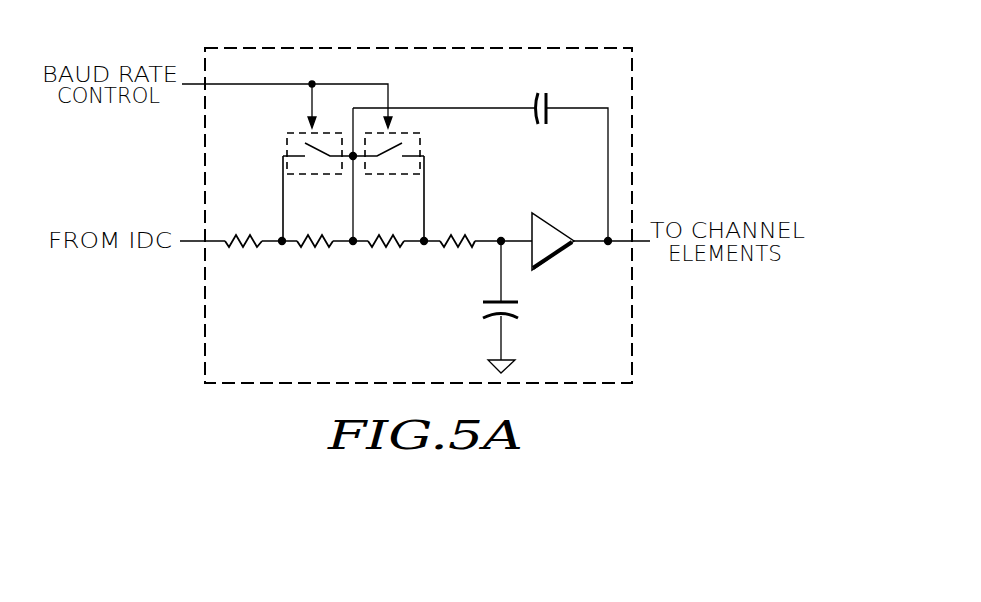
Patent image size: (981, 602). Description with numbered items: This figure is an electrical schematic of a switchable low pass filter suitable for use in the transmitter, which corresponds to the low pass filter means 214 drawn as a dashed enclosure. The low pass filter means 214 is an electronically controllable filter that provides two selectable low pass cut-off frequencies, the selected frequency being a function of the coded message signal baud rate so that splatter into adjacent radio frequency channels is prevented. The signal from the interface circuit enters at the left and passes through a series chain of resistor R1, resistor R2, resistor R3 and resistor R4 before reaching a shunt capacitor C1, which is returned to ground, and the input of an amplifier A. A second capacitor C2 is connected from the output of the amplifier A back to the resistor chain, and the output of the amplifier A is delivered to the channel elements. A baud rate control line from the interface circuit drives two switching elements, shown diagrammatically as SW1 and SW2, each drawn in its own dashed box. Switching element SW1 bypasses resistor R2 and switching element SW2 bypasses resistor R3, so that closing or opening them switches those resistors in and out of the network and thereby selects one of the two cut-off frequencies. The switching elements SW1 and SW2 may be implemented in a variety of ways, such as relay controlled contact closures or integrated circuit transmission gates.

The low pass filter means 214 is at (595, 47).
The switching element SW1 is at (305, 162).
The switching element SW2 is at (392, 165).
The resistor R1 is at (243, 230).
The resistor R2 is at (315, 230).
The resistor R3 is at (386, 230).
The resistor R4 is at (457, 230).
The capacitor C1 is at (513, 307).
The capacitor C2 is at (480, 167).
The amplifier A is at (553, 241).